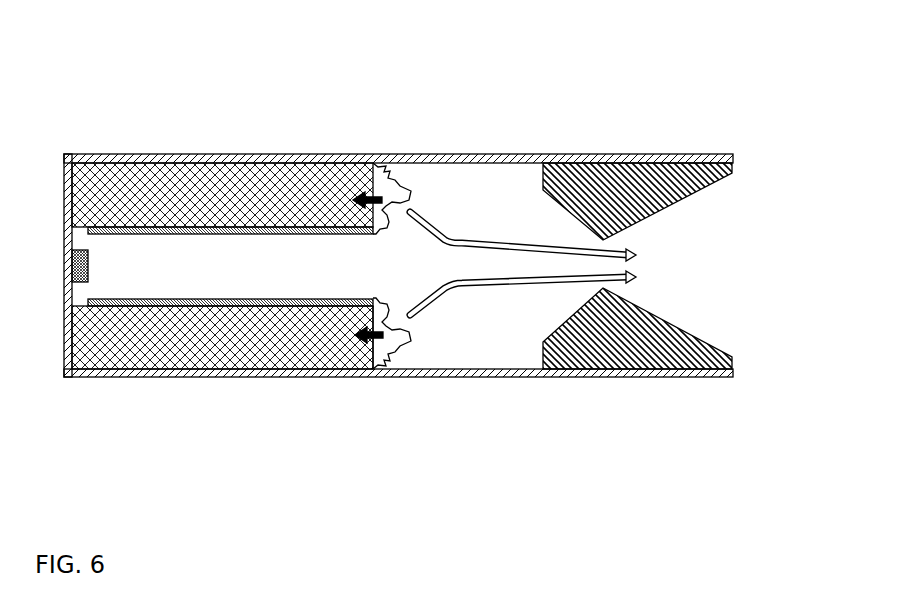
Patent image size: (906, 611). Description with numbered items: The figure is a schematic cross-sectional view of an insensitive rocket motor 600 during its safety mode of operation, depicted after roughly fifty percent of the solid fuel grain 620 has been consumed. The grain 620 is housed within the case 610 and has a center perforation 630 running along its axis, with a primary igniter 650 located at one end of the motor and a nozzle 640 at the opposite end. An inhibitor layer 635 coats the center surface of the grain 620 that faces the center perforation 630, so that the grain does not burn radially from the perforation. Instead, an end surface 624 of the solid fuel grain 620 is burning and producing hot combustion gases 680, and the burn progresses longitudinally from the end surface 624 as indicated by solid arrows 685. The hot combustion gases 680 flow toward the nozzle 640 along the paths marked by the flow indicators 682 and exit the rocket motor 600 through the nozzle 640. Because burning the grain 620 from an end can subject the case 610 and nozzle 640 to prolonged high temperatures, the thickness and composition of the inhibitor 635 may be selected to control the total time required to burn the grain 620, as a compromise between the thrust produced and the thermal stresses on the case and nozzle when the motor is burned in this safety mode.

The insensitive rocket motor 600 is at (187, 73).
The case 610 is at (667, 377).
The solid fuel grain 620 is at (193, 195).
The end surface 624 is at (370, 353).
The center perforation 630 is at (167, 268).
The inhibitor layer 635 is at (210, 234).
The nozzle 640 is at (682, 200).
The primary igniter 650 is at (72, 268).
The hot combustion gases 680 is at (392, 175).
The deflector flaps / gas flow guides 682 is at (636, 260).
The solid arrows 685 is at (377, 343).